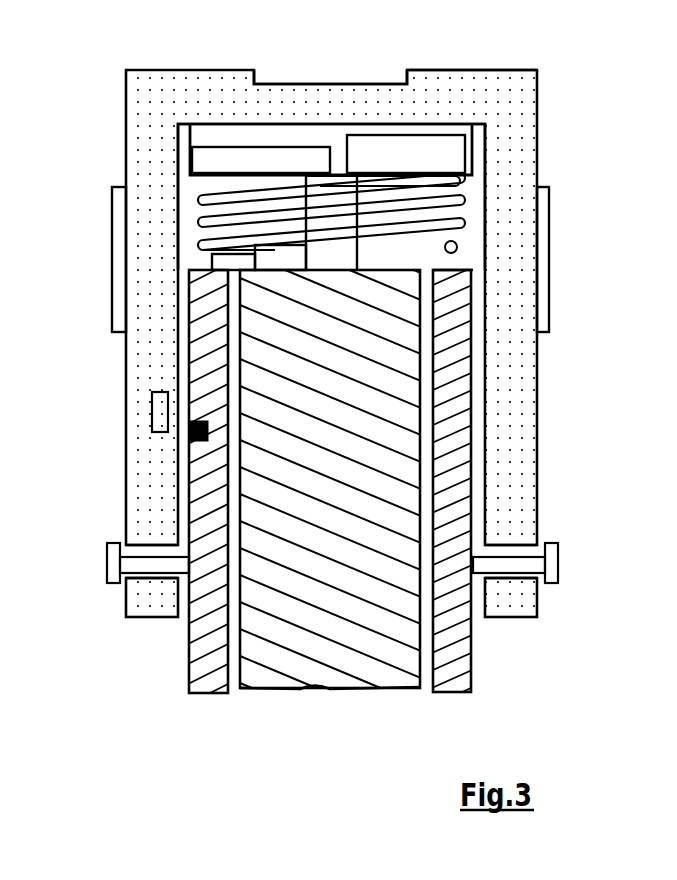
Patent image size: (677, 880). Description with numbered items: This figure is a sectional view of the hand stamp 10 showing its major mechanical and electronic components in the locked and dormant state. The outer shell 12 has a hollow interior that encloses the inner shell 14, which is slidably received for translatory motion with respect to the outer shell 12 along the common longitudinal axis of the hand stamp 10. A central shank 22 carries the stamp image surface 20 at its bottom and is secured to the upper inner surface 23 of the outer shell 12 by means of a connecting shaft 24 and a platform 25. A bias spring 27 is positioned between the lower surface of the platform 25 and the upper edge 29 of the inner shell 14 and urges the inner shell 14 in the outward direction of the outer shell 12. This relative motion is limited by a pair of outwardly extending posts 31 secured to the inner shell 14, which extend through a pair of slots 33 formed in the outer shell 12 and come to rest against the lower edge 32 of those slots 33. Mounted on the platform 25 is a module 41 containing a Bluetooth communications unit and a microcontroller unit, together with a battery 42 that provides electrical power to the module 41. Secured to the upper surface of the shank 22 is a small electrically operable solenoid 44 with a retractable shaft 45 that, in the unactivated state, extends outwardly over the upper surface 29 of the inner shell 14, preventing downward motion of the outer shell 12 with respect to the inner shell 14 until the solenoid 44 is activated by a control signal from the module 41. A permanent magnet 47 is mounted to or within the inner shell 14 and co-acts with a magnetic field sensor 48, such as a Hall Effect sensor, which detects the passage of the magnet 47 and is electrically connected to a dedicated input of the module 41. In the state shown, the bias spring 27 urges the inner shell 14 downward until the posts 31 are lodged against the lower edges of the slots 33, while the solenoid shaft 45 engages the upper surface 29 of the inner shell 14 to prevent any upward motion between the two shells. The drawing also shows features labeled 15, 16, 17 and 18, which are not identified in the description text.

The hand stamp 10 is at (549, 95).
The outer shell 12 is at (522, 384).
The inner shell 14 is at (464, 671).
The left mounting bracket 15 is at (121, 222).
The right mounting bracket 16 is at (542, 270).
The top wall 17 is at (380, 80).
The recess 18 is at (332, 77).
The stamp image surface 20 is at (385, 691).
The central shank 22 is at (385, 440).
The upper inner surface 23 is at (447, 128).
The connecting shaft 24 is at (330, 259).
The platform 25 is at (190, 137).
The bias spring 27 is at (447, 200).
The upper edge 29 is at (456, 268).
The posts 31 is at (130, 565).
The lower edge 32 is at (147, 575).
The slots 33 is at (130, 548).
The module 41 is at (265, 158).
The battery 42 is at (440, 153).
The solenoid 44 is at (270, 258).
The retractable shaft 45 is at (213, 260).
The permanent magnet 47 is at (190, 438).
The magnetic field sensor 48 is at (152, 400).